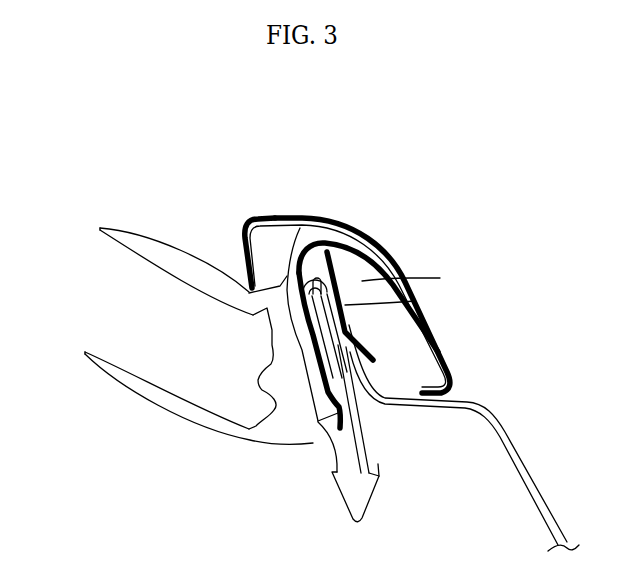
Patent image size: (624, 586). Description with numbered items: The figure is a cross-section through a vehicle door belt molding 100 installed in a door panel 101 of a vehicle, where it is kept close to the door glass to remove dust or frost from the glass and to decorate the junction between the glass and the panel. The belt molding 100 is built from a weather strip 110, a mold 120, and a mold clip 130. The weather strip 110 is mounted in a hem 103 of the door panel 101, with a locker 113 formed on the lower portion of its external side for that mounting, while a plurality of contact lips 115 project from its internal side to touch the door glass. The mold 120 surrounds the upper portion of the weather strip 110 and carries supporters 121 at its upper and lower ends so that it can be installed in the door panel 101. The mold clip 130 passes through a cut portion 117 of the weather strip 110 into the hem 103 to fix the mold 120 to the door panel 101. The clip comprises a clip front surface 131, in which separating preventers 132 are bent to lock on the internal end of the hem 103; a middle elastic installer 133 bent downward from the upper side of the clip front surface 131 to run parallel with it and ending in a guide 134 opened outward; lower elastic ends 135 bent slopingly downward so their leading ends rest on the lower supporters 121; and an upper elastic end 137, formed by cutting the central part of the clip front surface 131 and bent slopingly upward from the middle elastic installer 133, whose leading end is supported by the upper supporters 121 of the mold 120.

The vehicle door belt molding 100 is at (364, 115).
The door panel 101 is at (392, 385).
The hem 103 is at (415, 301).
The weather strip 110 is at (256, 315).
The locker 113 is at (378, 470).
The contact lips 115 is at (99, 228).
The cut portion 117 is at (320, 216).
The mold 120 is at (371, 208).
The supporters 121 is at (253, 216).
The mold clip 130 is at (353, 251).
The clip front surface 131 is at (308, 350).
The separating preventers 132 is at (318, 421).
The middle elastic installer 133 is at (400, 276).
The guide 134 is at (378, 357).
The lower elastic ends 135 is at (440, 278).
The upper elastic end 137 is at (241, 232).